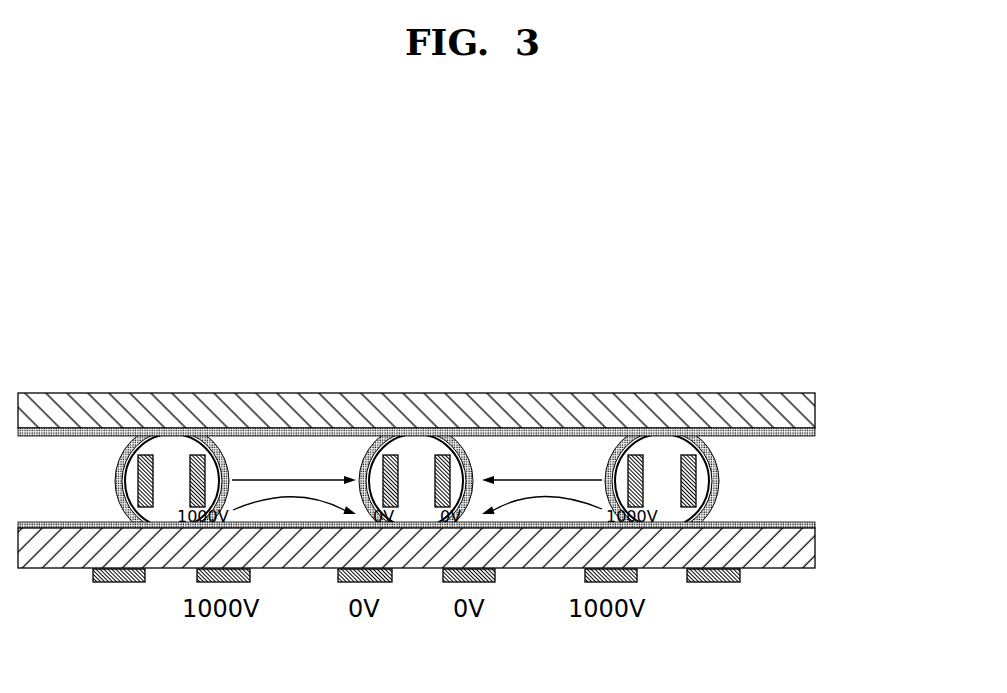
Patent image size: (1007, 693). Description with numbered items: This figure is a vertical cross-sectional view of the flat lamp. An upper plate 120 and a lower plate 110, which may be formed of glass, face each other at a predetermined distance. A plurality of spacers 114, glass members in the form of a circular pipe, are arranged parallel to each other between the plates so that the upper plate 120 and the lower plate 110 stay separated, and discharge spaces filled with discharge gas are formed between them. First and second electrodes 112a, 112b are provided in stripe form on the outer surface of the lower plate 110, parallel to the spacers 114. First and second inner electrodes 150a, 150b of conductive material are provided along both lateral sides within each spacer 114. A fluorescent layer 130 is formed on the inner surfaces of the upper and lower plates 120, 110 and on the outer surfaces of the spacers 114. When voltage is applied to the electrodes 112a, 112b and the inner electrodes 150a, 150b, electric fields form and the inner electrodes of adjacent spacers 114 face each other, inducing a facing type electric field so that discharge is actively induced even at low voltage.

The lower plate 110 is at (803, 552).
The first electrode 112a is at (338, 582).
The second electrode 112b is at (443, 582).
The spacer 114 is at (421, 440).
The upper plate 120 is at (803, 413).
The fluorescent layer 130 is at (537, 436).
The first inner electrode 150a is at (386, 455).
The second inner electrode 150b is at (203, 455).